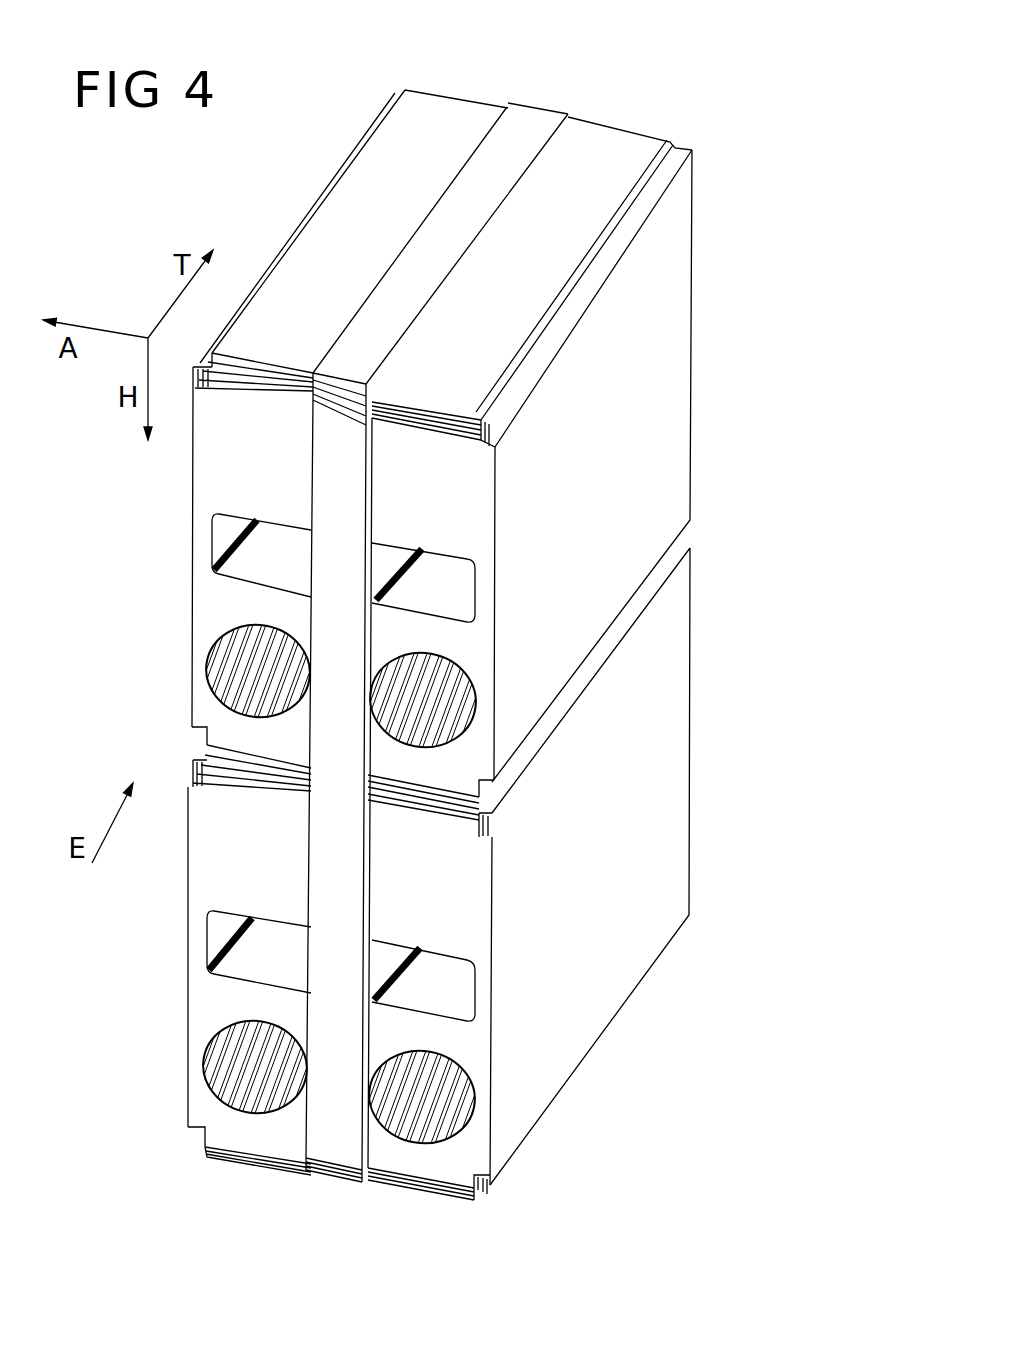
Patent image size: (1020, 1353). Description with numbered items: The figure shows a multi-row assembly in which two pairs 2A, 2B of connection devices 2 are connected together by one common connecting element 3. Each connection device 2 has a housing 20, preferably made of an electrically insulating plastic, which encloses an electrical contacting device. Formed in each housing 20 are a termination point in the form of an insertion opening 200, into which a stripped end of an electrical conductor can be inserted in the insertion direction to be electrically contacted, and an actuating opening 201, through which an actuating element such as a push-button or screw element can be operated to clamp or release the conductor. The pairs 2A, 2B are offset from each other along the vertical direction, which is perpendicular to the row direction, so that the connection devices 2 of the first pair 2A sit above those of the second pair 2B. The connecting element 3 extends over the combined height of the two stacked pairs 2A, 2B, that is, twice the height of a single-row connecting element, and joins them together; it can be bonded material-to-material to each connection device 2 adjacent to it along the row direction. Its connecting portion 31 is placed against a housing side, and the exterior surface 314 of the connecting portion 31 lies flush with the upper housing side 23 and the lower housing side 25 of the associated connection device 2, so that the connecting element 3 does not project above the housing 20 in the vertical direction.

The connection device 2 is at (450, 652).
The first pair of connection devices 2A is at (504, 463).
The second pair of connection devices 2B is at (502, 909).
The connecting element 3 is at (453, 597).
The connecting portion 31 is at (437, 612).
The exterior surface 314 is at (405, 322).
The upper housing side 23 is at (555, 250).
The housing 20 is at (475, 1150).
The insertion opening 200 is at (230, 673).
The actuating opening 201 is at (227, 553).
The lower housing side 25 is at (381, 1215).